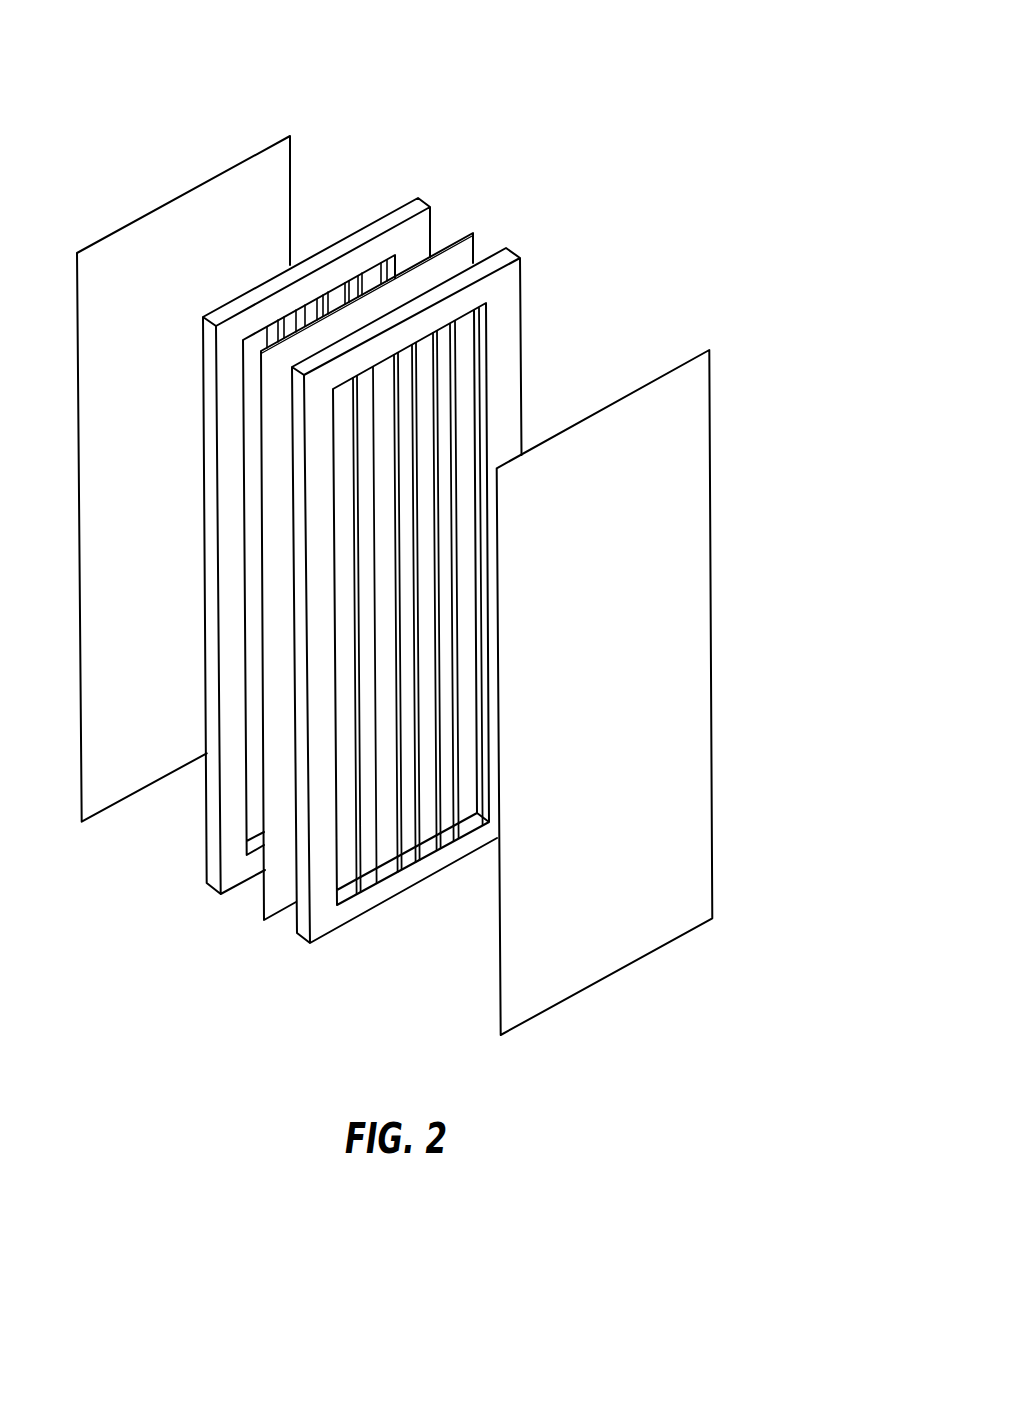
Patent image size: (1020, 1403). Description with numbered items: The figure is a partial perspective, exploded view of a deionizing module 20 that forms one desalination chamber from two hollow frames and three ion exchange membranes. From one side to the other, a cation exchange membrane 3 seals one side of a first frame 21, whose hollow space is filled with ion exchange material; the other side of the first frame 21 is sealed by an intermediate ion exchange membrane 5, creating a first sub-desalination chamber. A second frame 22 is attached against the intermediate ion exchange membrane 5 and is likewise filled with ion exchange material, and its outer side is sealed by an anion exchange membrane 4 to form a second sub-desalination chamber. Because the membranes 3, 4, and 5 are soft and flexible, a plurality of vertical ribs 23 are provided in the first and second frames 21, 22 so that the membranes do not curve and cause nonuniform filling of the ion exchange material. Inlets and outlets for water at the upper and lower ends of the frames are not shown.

The deionizing module 20 is at (692, 126).
The cation exchange membrane 3 is at (260, 152).
The first frame 21 is at (422, 202).
The ribs 23 is at (352, 293).
The intermediate ion exchange membrane 5 is at (460, 236).
The second frame 22 is at (503, 288).
The anion exchange membrane 4 is at (682, 363).